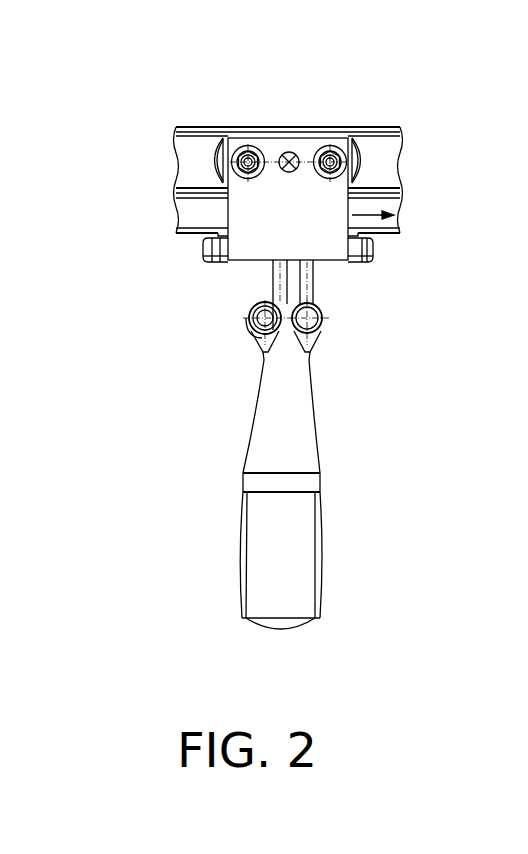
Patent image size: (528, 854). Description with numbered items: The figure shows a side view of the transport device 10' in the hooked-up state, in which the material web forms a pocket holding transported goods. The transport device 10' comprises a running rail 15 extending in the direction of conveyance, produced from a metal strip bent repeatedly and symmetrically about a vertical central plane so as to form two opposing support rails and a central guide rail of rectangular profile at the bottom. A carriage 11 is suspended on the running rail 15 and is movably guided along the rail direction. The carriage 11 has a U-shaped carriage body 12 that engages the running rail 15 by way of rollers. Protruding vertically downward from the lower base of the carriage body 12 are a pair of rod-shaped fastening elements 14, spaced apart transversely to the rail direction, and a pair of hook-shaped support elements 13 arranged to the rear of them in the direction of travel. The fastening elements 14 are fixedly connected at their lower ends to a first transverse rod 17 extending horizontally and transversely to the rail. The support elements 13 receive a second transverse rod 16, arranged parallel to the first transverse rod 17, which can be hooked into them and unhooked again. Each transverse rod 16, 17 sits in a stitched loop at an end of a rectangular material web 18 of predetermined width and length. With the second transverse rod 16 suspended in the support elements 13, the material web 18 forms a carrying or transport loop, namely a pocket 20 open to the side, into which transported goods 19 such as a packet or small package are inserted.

The transport device 10' is at (263, 319).
The carriage 11 is at (296, 118).
The carriage body 12 is at (302, 236).
The support elements 13 is at (283, 283).
The fastening elements 14 is at (307, 282).
The running rail 15 is at (385, 160).
The second transverse rod 16 is at (255, 335).
The first transverse rod 17 is at (320, 332).
The material web 18 is at (317, 457).
The transported goods 19 is at (287, 547).
The pocket 20 is at (236, 554).